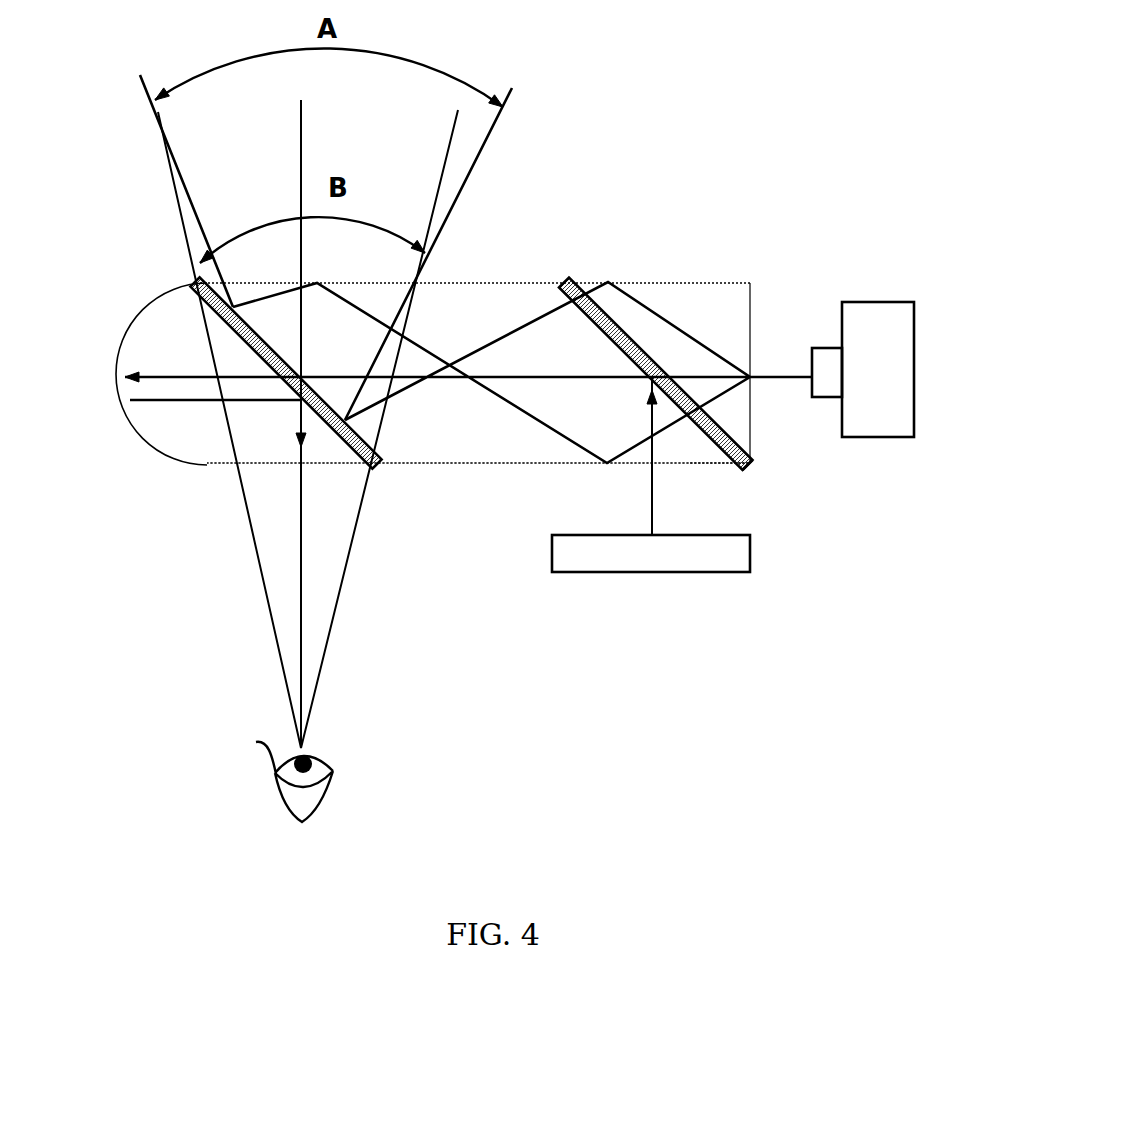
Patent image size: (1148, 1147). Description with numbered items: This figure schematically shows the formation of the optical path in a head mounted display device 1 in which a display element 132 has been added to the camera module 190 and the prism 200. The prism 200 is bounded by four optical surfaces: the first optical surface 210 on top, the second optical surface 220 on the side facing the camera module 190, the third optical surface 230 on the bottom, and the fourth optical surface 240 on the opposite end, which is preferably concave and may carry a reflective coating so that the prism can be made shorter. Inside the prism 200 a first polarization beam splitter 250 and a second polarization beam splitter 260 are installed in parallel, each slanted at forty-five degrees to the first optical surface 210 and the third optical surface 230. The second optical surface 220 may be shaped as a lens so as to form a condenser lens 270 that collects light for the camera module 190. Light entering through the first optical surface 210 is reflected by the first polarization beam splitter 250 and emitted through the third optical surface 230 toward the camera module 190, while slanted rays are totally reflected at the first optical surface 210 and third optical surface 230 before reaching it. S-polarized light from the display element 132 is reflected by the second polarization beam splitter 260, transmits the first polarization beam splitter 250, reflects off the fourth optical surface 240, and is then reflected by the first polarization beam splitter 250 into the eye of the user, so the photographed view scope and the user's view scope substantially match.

The head mounted display device 1 is at (687, 132).
The prism 200 is at (695, 277).
The first optical surface 210 is at (497, 281).
The second optical surface 220 is at (752, 317).
The third optical surface 230 is at (487, 467).
The fourth optical surface 240 is at (145, 440).
The first polarization beam splitter 250 is at (224, 332).
The second polarization beam splitter 260 is at (617, 307).
The condenser lens 270 is at (752, 430).
The camera module 190 is at (895, 302).
The display element 132 is at (750, 548).